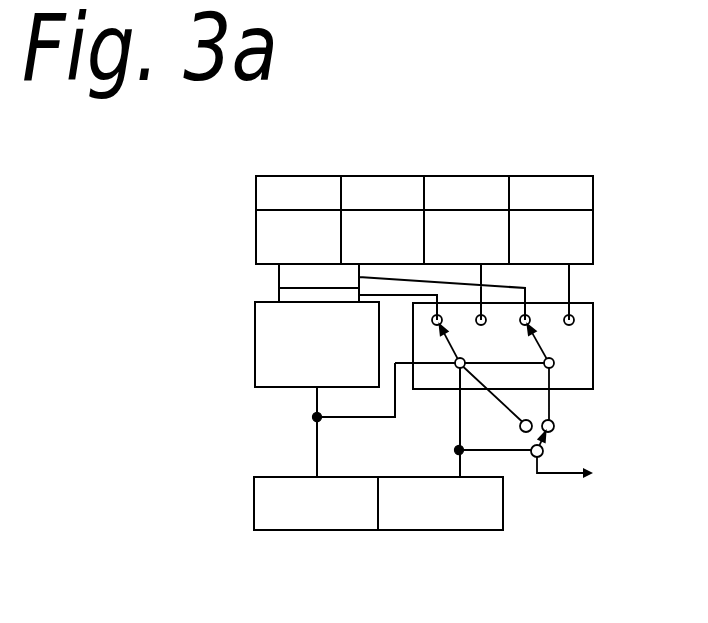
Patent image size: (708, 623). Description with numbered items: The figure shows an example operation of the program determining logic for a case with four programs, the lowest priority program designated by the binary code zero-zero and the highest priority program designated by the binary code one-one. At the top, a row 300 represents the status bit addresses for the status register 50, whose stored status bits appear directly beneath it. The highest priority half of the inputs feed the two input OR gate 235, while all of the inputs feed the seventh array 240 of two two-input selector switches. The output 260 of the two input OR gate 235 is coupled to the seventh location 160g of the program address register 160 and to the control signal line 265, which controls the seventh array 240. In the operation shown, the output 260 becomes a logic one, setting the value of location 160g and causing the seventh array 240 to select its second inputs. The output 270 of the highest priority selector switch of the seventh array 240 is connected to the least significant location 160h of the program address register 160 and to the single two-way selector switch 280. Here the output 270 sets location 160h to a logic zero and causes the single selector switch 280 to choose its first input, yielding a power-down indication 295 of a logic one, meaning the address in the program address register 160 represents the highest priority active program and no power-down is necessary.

The row 300 is at (593, 203).
The status register 50 is at (593, 242).
The seventh array of two-way selector switches 240 is at (593, 330).
The two input OR gate 235 is at (255, 360).
The output of the two input OR gate 260 is at (317, 398).
The control signal line 265 is at (347, 420).
The single selector switch 280 is at (592, 424).
The power-down indication 295 is at (567, 475).
The output of the highest priority two-way selector switch 270 is at (463, 458).
The program address register 160 is at (253, 498).
The seventh MSL of the program address register 160g is at (311, 530).
The least significant location of the program address register 160h is at (437, 530).